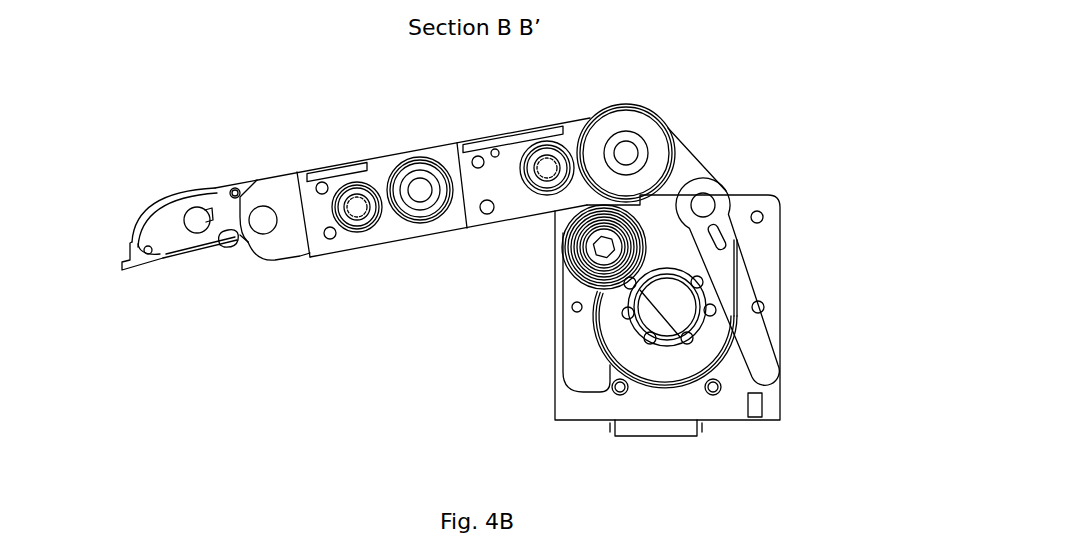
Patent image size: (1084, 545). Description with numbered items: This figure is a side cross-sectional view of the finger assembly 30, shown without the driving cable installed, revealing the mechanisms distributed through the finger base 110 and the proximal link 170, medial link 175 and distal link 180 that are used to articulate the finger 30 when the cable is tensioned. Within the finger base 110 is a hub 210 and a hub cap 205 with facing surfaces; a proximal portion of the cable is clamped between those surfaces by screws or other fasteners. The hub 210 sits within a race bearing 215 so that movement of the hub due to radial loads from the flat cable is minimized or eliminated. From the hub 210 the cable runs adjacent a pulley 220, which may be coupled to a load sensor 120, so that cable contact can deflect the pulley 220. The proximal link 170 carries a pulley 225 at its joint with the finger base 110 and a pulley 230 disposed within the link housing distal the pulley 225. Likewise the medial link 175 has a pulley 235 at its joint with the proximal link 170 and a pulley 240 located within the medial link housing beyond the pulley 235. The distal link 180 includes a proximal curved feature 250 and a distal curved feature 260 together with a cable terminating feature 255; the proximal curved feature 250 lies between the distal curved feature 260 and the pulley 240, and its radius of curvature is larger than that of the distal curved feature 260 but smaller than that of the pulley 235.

The finger 30 is at (865, 70).
The finger base 110 is at (806, 262).
The load sensor 120 is at (753, 320).
The proximal link 170 is at (528, 214).
The medial link 175 is at (403, 237).
The distal link 180 is at (282, 263).
The hub cap 205 is at (653, 322).
The hub 210 is at (687, 313).
The race bearing 215 is at (603, 343).
The pulley 220 is at (703, 182).
The pulley 225 is at (657, 133).
The pulley 230 is at (533, 167).
The pulley 235 is at (410, 168).
The pulley 240 is at (355, 192).
The proximal curved feature 250 is at (260, 198).
The cable terminating feature 255 is at (193, 213).
The distal curved feature 260 is at (230, 245).